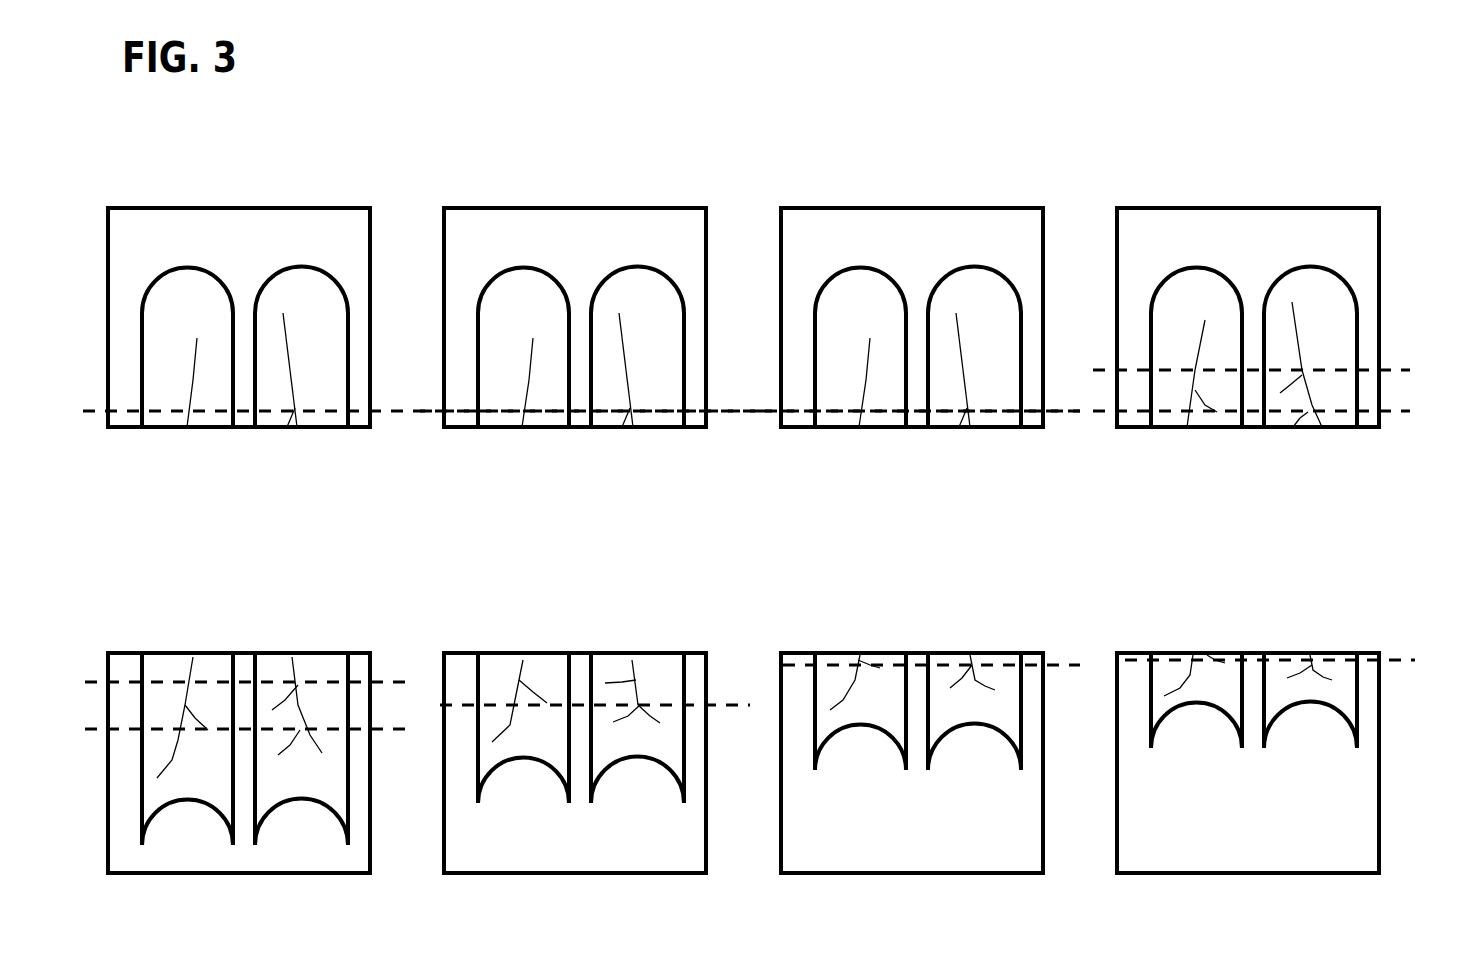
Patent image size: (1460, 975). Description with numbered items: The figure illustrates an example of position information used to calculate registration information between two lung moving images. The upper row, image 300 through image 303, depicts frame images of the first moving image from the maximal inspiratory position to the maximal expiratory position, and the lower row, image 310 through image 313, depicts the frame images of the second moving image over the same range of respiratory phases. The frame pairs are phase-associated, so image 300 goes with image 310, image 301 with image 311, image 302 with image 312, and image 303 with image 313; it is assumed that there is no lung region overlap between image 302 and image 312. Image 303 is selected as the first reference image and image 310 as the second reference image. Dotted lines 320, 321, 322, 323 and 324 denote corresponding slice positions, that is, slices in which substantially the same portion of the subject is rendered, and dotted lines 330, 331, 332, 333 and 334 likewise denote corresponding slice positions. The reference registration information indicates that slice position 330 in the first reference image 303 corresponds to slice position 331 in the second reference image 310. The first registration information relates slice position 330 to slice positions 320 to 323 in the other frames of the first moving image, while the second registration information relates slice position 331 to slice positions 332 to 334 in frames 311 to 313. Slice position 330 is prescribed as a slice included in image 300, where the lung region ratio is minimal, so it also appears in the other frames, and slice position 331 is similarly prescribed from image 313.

The image 300 is at (322, 208).
The image 301 is at (657, 208).
The image 302 is at (995, 208).
The image 303 is at (1330, 208).
The image 310 is at (322, 653).
The image 311 is at (658, 653).
The image 312 is at (995, 653).
The image 313 is at (1330, 653).
The dotted line 320 is at (173, 428).
The dotted line 321 is at (505, 428).
The dotted line 322 is at (840, 428).
The dotted line 323 is at (1393, 368).
The slice position 330 is at (1393, 413).
The dotted line 324 is at (390, 680).
The slice position 331 is at (390, 731).
The dotted line 332 is at (718, 704).
The dotted line 333 is at (1062, 664).
The dotted line 334 is at (1395, 659).